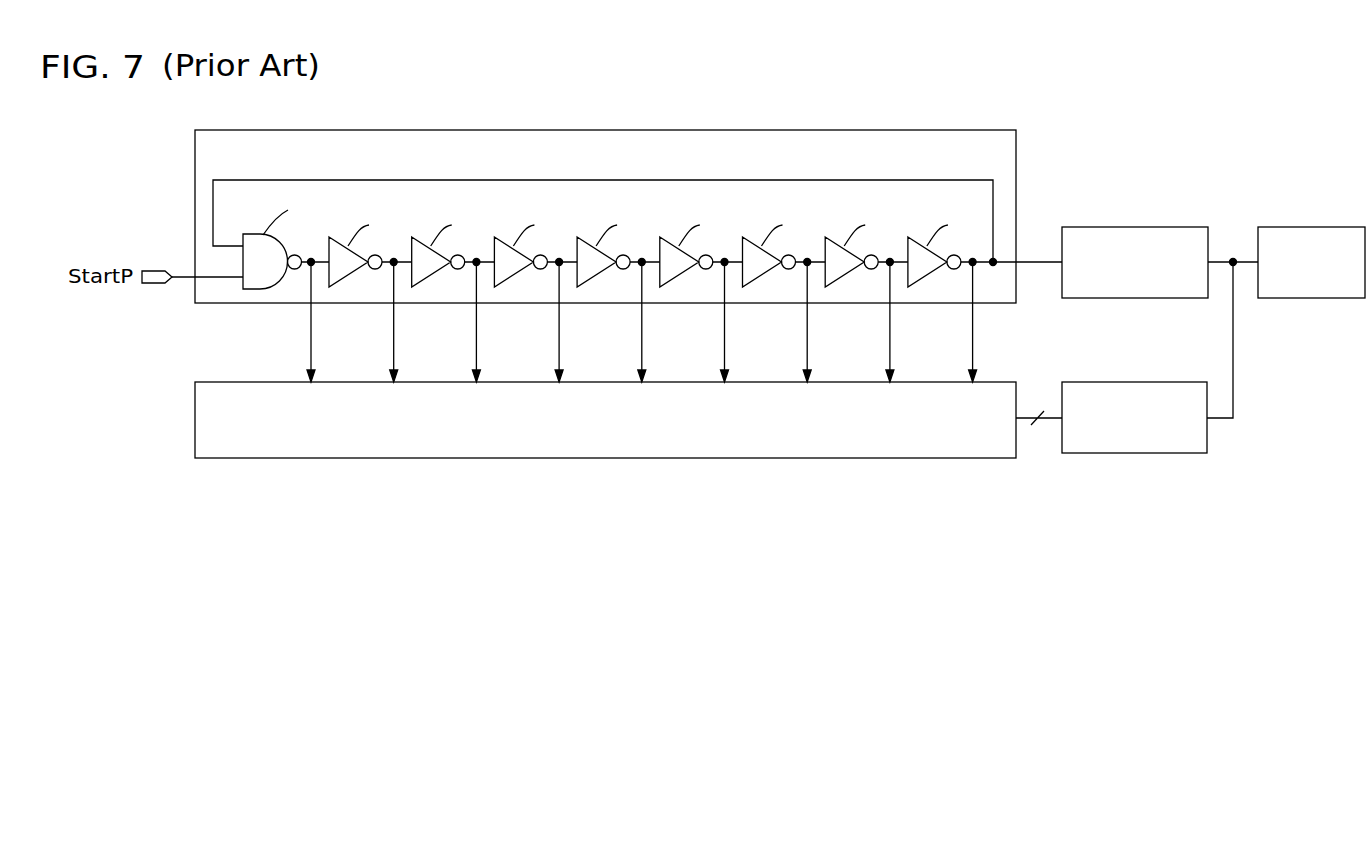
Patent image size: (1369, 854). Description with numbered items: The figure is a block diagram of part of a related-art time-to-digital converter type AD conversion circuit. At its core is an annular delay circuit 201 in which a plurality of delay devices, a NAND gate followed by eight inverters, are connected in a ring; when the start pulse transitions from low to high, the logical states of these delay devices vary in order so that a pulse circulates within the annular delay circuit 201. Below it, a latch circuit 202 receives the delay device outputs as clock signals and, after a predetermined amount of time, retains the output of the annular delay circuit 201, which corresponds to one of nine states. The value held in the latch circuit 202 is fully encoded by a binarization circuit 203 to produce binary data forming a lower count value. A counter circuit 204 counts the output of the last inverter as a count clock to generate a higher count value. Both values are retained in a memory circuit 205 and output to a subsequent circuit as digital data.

The annular delay circuit 201 is at (683, 130).
The latch circuit 202 is at (609, 458).
The binarization circuit 203 is at (1145, 382).
The counter circuit 204 is at (1145, 227).
The memory circuit 205 is at (1300, 227).